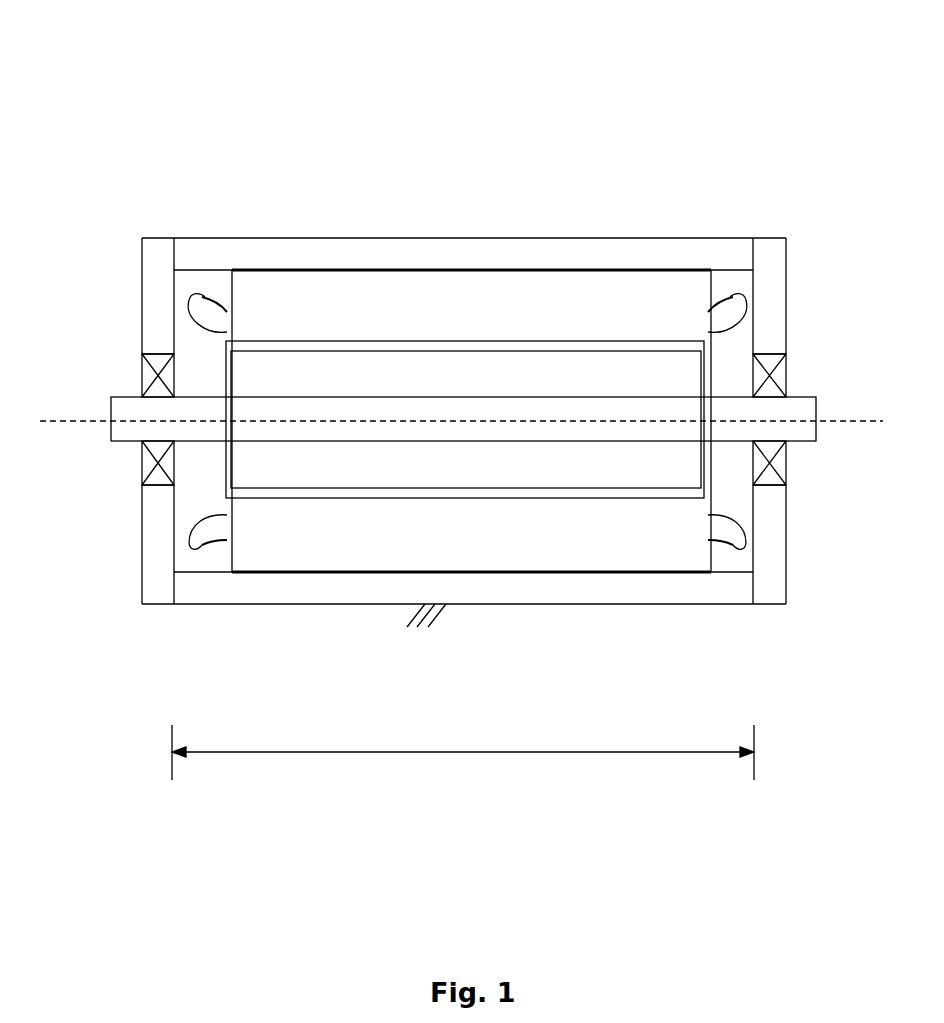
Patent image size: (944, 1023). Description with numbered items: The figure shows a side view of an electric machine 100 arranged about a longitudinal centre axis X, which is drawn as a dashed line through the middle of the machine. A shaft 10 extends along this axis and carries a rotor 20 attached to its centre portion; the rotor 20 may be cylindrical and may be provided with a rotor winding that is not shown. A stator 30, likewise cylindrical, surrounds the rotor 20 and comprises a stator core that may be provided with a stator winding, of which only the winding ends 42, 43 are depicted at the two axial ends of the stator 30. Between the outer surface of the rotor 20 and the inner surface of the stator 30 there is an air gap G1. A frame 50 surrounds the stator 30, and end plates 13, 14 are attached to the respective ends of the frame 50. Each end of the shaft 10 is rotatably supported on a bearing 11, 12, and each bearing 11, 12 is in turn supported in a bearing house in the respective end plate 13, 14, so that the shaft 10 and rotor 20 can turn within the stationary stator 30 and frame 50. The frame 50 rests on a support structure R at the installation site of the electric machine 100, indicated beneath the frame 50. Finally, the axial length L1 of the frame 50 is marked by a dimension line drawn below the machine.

The electric machine 100 is at (717, 82).
The frame 50 is at (594, 245).
The end plate 14 is at (152, 257).
The end plate 13 is at (778, 258).
The bearing 12 is at (145, 378).
The bearing 11 is at (783, 378).
The shaft 10 is at (127, 437).
The longitudinal centre axis X is at (57, 420).
The stator 30 is at (485, 318).
The rotor 20 is at (485, 388).
The air gap G1 is at (370, 348).
The winding end 43 is at (218, 320).
The winding end 42 is at (710, 320).
The support structure R is at (426, 632).
The axial length L1 is at (463, 750).